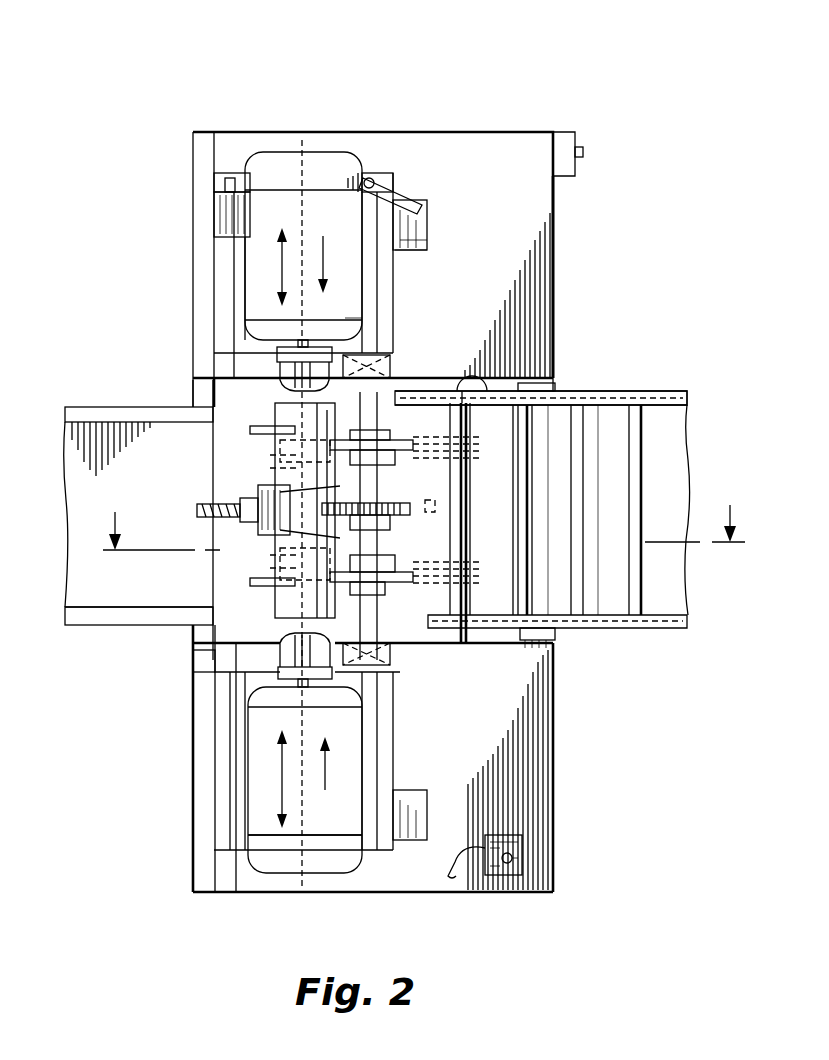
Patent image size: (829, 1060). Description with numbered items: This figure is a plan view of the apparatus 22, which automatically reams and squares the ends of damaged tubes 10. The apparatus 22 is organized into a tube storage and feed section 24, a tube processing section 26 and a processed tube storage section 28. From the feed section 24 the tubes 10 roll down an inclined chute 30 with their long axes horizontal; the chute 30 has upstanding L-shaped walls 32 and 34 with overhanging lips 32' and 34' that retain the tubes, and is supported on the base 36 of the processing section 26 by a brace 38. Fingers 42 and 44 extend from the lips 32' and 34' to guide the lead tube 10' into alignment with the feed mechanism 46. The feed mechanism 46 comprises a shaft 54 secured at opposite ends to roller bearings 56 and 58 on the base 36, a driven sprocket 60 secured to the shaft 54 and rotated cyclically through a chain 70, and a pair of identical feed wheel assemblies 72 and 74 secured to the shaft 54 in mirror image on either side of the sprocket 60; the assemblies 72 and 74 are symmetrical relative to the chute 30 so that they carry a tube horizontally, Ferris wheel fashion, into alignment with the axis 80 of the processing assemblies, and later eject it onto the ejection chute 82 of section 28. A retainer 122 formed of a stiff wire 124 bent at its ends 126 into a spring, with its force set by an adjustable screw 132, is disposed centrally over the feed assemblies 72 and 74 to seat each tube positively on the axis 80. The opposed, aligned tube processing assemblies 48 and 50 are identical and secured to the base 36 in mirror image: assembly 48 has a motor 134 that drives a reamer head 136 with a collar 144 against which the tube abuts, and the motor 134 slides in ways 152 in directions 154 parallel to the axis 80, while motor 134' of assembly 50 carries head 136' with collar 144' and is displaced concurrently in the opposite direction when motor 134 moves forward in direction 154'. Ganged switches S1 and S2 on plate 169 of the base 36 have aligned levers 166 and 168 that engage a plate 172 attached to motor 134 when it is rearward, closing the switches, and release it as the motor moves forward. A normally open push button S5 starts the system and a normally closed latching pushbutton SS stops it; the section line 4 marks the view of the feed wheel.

The apparatus 22 is at (612, 95).
The tube storage and feed section 24 is at (690, 290).
The tube processing section 26 is at (263, 82).
The processed tube storage section 28 is at (68, 395).
The inclined chute 30 is at (690, 366).
The L-shaped wall 32 is at (541, 371).
The overhanging lip 32' is at (571, 398).
The L-shaped wall 34 is at (557, 640).
The overhanging lip 34' is at (587, 623).
The base 36 is at (548, 755).
The brace 38 is at (553, 388).
The finger 42 is at (470, 450).
The finger 44 is at (458, 640).
The feed mechanism 46 is at (447, 497).
The tube processing assembly 48 is at (152, 328).
The tube processing assembly 50 is at (162, 803).
The shaft 54 is at (380, 425).
The roller bearing 56 is at (392, 650).
The roller bearing 58 is at (392, 366).
The sprocket 60 is at (396, 588).
The chain 70 is at (420, 525).
The feed wheel assembly 72 is at (250, 430).
The feed wheel assembly 74 is at (250, 582).
The axis 80 is at (302, 858).
The ejection chute 82 is at (72, 576).
The tube 10 is at (622, 510).
The lead tube 10' is at (498, 509).
The section line 4- 4 is at (424, 514).
The retainer 122 is at (236, 478).
The stiff wire 124 is at (285, 540).
The wire end 126 is at (385, 488).
The adjustable screw 132 is at (197, 511).
The motor 134 is at (303, 222).
The motor 134' is at (348, 765).
The reamer head 136 is at (285, 372).
The lower coupling 136' is at (237, 657).
The collar 144 is at (340, 314).
The lower motor shaft 144' is at (229, 699).
The ways 152 is at (233, 178).
The directions 154 is at (272, 515).
The forward direction 154' is at (335, 248).
The operating lever 166 is at (395, 195).
The operating lever 168 is at (428, 210).
The plate 169 is at (548, 280).
The plate 172 is at (363, 172).
The switch S1 is at (427, 242).
The switch S2 is at (418, 250).
The push button switch S5 is at (583, 152).
The latching pushbutton switch SS is at (508, 836).